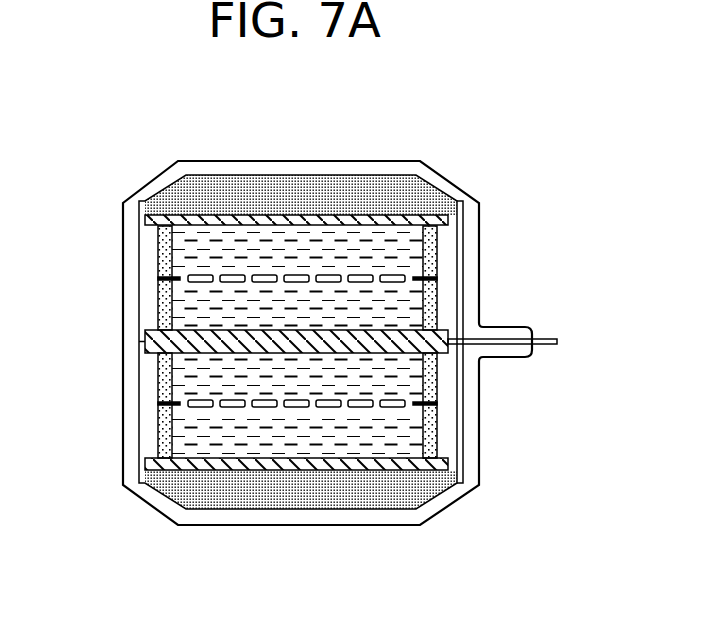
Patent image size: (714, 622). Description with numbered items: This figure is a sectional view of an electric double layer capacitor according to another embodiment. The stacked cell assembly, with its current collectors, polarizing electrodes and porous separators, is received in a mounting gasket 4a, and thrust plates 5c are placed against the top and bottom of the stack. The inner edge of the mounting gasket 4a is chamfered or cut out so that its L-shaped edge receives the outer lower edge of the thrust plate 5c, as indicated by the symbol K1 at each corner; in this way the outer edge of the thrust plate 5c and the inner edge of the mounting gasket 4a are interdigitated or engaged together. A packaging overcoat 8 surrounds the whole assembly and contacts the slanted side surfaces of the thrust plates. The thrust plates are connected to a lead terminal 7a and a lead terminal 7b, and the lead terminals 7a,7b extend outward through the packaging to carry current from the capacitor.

The packaging overcoat 8 is at (177, 163).
The lead terminal 7a is at (470, 238).
The lead terminal 7b is at (470, 430).
The lead terminals 7a,7b is at (550, 338).
The thrust plate 5c is at (360, 178).
The mounting gasket 4a is at (137, 282).
The cutout K1 is at (480, 533).